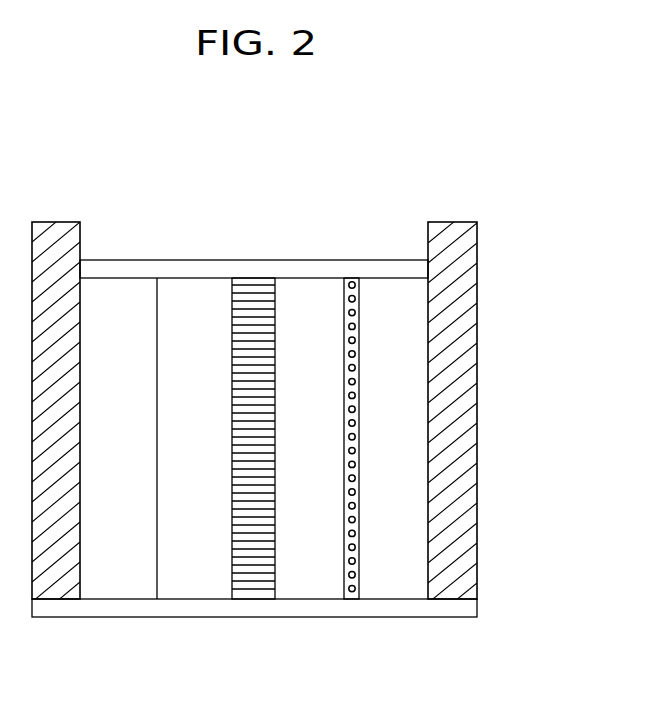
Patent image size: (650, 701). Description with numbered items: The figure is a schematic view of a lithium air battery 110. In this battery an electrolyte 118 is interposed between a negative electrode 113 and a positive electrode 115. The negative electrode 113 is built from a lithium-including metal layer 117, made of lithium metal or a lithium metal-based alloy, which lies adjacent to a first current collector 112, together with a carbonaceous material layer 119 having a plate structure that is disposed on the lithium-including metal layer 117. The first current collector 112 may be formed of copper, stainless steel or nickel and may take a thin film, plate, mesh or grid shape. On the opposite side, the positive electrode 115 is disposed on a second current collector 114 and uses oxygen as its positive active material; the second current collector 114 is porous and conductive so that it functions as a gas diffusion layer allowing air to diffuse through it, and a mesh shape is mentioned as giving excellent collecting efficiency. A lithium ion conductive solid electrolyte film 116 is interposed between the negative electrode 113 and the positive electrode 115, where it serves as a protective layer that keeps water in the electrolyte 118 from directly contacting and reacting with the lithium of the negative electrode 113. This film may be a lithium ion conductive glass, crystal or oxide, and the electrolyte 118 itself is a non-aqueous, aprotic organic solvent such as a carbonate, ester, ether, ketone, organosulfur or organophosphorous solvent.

The lithium air battery 110 is at (522, 203).
The first current collector 112 is at (452, 227).
The negative electrode 113 is at (428, 627).
The second current collector 114 is at (58, 227).
The positive electrode 115 is at (120, 288).
The lithium ion conductive solid electrolyte film 116 is at (254, 285).
The lithium-including metal layer 117 is at (413, 439).
The electrolyte 118 is at (196, 593).
The carbonaceous material layer 119 is at (351, 283).